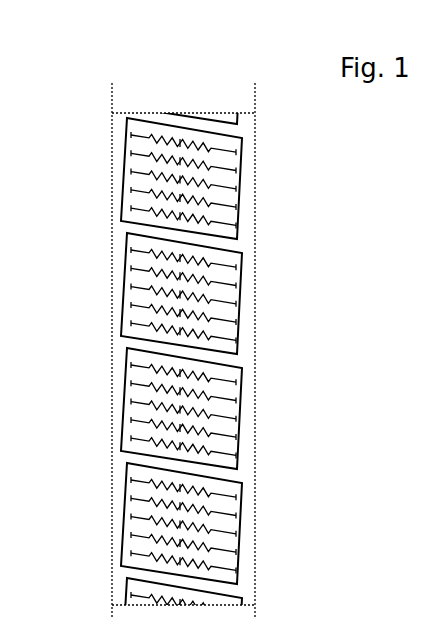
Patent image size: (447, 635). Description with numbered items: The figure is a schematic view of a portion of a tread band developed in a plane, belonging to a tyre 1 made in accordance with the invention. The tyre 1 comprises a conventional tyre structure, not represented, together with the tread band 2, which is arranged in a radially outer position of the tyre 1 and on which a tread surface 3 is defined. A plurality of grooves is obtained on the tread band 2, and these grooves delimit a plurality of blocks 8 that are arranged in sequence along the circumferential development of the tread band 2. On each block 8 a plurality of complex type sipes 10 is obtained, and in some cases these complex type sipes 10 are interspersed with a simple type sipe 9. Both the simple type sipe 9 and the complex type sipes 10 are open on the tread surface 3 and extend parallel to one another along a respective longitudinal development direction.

The tyre 1 is at (173, 84).
The tread band 2 is at (228, 143).
The tread surface 3 is at (143, 333).
The block 8 is at (220, 393).
The simple type sipe 9 is at (235, 183).
The complex type sipe 10 is at (235, 165).